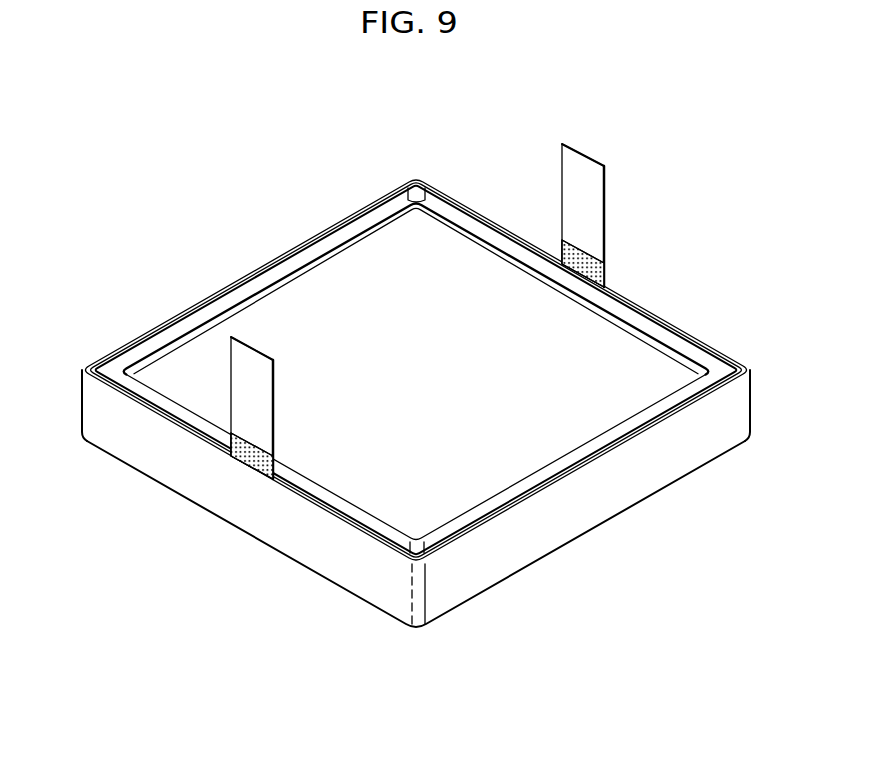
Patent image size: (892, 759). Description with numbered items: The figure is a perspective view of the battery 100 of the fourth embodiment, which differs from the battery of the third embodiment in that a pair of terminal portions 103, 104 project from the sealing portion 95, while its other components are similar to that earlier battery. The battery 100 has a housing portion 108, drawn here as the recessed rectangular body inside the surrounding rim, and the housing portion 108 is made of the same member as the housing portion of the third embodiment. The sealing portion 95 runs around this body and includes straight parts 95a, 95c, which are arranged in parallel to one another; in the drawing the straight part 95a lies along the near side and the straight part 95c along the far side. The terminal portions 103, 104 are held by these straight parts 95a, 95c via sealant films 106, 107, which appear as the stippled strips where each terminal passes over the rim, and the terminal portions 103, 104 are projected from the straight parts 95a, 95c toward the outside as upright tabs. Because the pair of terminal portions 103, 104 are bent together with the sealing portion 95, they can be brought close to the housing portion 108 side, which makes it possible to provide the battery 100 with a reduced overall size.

The battery 100 is at (130, 242).
The sealing portion 95 is at (436, 413).
The straight part 95a is at (316, 545).
The straight part 95c is at (683, 340).
The housing portion 108 is at (316, 305).
The terminal portion 103 is at (176, 469).
The terminal portion 104 is at (631, 215).
The sealant film 106 is at (244, 458).
The sealant film 107 is at (605, 272).